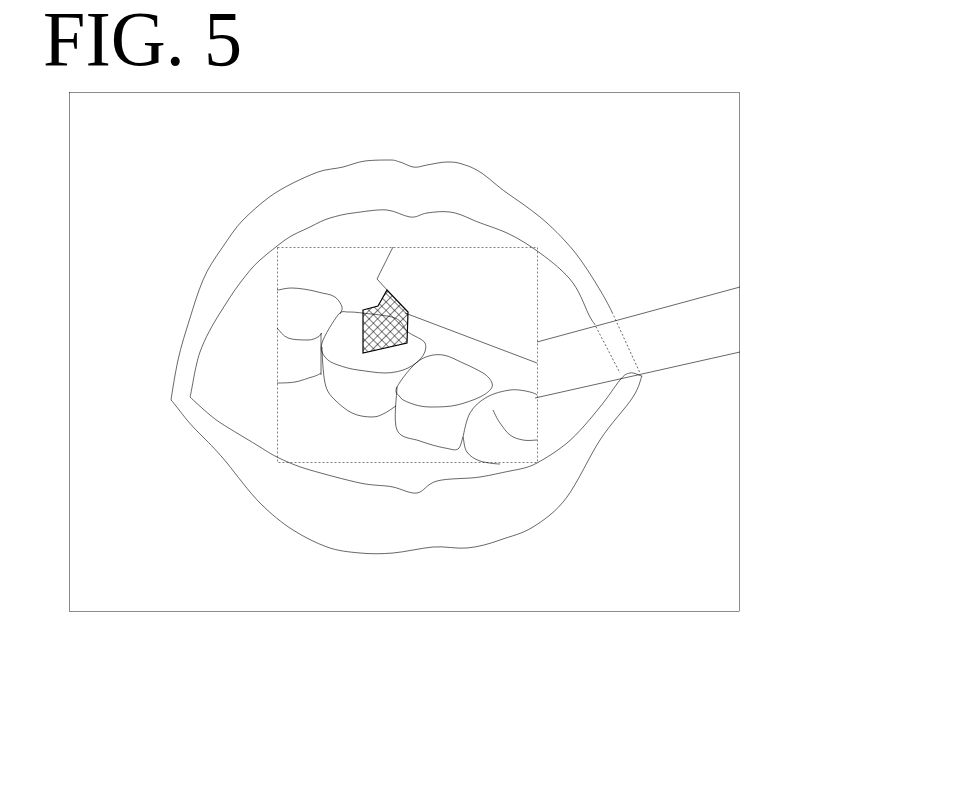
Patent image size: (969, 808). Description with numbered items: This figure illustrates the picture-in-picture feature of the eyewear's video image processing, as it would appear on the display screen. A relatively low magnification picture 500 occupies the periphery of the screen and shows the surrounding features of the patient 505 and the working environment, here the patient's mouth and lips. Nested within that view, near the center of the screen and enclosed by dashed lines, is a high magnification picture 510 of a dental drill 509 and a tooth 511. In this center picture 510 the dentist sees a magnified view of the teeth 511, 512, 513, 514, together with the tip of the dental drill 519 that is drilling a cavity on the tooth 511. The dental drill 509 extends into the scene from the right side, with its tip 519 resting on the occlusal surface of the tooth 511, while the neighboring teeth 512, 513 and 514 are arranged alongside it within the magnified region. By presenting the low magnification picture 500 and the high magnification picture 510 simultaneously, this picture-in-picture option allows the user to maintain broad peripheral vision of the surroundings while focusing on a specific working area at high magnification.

The low magnification picture 500 is at (138, 590).
The patient 505 is at (225, 438).
The dental drill 509 is at (518, 320).
The high magnification picture 510 is at (520, 263).
The tooth 511 is at (372, 363).
The tooth 512 is at (443, 413).
The tooth 513 is at (510, 442).
The tooth 514 is at (288, 357).
The tip of dental drill 519 is at (390, 295).